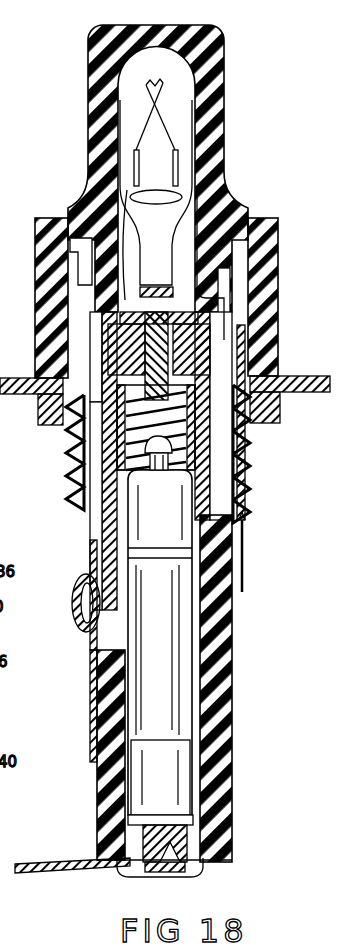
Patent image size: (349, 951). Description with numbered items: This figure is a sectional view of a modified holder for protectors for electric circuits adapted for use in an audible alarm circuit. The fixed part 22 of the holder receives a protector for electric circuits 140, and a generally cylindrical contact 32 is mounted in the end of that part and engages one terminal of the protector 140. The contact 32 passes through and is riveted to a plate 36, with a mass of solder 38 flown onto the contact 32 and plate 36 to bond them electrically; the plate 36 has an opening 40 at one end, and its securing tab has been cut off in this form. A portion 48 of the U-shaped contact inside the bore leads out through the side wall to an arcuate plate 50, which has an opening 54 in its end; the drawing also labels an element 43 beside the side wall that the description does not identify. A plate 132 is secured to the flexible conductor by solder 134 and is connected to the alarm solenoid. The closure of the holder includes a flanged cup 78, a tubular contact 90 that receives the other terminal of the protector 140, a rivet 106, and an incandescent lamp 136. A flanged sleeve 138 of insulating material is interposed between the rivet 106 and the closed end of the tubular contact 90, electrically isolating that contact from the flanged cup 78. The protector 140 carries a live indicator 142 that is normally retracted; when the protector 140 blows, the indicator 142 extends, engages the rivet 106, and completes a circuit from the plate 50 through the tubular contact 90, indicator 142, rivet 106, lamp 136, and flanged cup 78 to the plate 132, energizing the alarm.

The incandescent lamp 136 is at (179, 127).
The rivet 106 is at (161, 305).
The flanged cup 78 is at (227, 303).
The flanged sleeve 138 is at (115, 390).
The tubular contact 90 is at (113, 458).
The portion of the U-shaped contact 48 is at (100, 545).
The retaining clip 43 is at (82, 610).
The live indicator 142 is at (198, 455).
The solder 134 is at (247, 520).
The plate 132 is at (245, 550).
The fixed part of the holder 22 is at (295, 629).
The protector for electric circuits 140 is at (230, 683).
The plate 50 is at (92, 678).
The opening 54 is at (90, 727).
The contact 32 is at (200, 823).
The opening 40 is at (43, 871).
The plate 36 is at (88, 871).
The mass of solder 38 is at (160, 874).